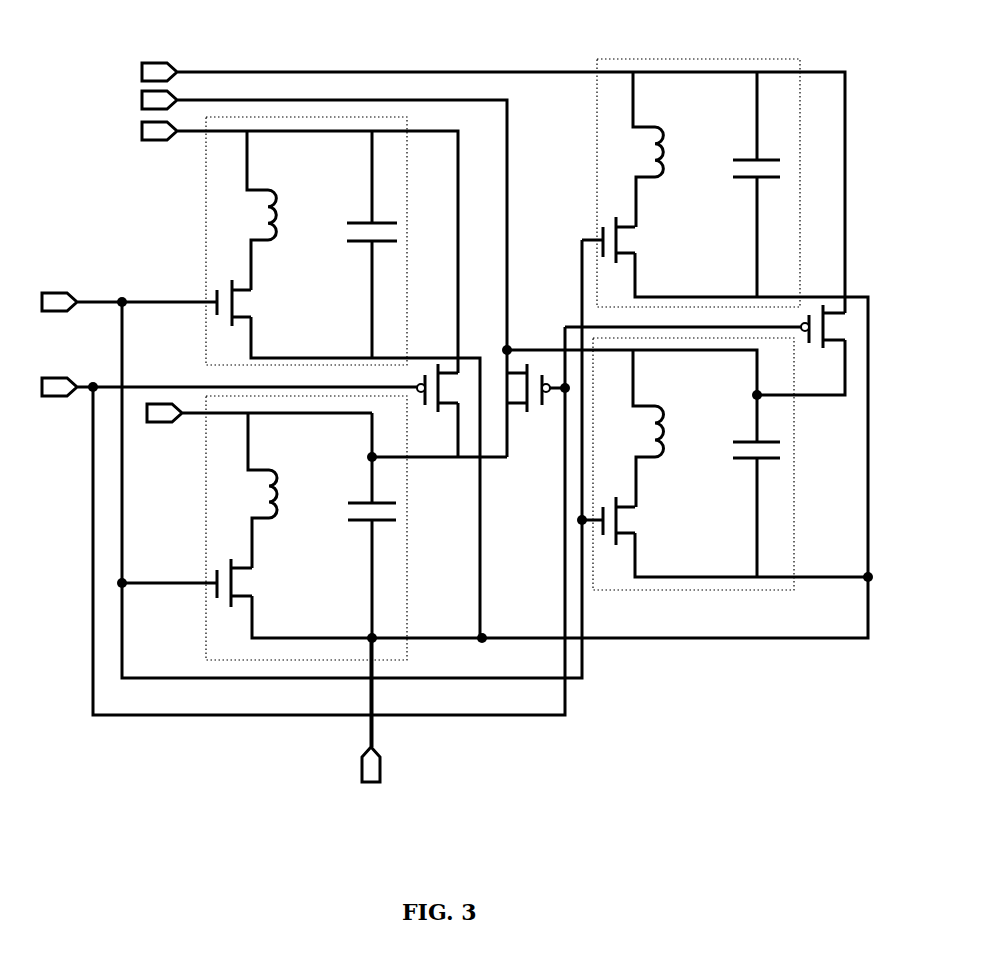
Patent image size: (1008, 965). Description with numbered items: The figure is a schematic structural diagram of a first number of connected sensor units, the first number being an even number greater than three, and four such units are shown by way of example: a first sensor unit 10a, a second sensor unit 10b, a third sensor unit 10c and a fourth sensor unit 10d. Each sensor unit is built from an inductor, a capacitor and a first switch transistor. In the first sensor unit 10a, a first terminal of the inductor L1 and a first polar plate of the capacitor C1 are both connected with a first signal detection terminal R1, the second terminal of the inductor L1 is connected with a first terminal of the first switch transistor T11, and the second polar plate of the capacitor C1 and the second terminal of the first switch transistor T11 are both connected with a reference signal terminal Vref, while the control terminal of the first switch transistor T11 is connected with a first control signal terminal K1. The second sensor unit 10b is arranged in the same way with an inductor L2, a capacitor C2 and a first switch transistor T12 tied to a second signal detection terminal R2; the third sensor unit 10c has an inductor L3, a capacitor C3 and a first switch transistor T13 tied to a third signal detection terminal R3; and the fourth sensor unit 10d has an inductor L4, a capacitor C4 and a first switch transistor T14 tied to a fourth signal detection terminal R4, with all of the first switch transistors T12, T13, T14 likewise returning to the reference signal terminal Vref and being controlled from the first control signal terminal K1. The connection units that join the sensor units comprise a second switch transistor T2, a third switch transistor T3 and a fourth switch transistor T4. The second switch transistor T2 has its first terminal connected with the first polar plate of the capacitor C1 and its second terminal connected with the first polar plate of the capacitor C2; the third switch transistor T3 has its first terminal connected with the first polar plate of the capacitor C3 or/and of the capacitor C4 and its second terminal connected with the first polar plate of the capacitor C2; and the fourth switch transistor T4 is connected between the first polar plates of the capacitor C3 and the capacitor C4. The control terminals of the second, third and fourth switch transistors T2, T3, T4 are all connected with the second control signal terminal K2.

The first sensor unit 10a is at (292, 116).
The second sensor unit 10b is at (406, 662).
The third sensor unit 10c is at (645, 590).
The fourth sensor unit 10d is at (685, 58).
The first signal detection terminal R1 is at (287, 289).
The second signal detection terminal R2 is at (259, 424).
The third signal detection terminal R3 is at (311, 273).
The fourth signal detection terminal R4 is at (480, 187).
The first control signal terminal K1 is at (312, 459).
The second control signal terminal K2 is at (303, 521).
The reference signal terminal Vref is at (349, 710).
The inductor L1 is at (271, 210).
The inductor L2 is at (272, 490).
The inductor L3 is at (657, 428).
The inductor L4 is at (657, 149).
The capacitor C1 is at (379, 232).
The capacitor C2 is at (379, 513).
The capacitor C3 is at (764, 451).
The capacitor C4 is at (764, 170).
The first switch transistor T11 is at (250, 303).
The first switch transistor T12 is at (250, 583).
The first switch transistor T13 is at (625, 521).
The first switch transistor T14 is at (625, 240).
The second switch transistor T2 is at (444, 388).
The third switch transistor T3 is at (520, 388).
The fourth switch transistor T4 is at (832, 326).